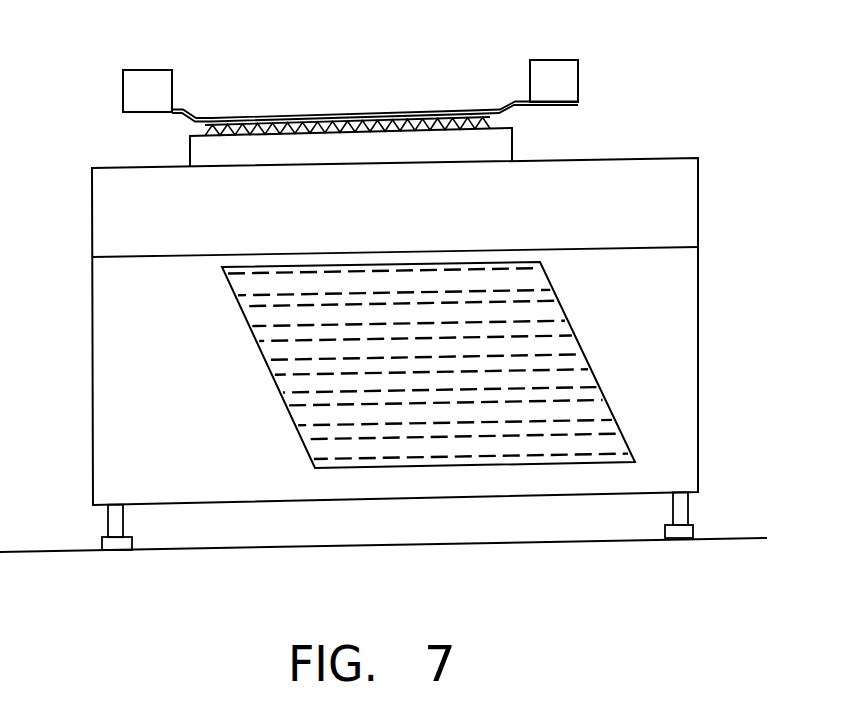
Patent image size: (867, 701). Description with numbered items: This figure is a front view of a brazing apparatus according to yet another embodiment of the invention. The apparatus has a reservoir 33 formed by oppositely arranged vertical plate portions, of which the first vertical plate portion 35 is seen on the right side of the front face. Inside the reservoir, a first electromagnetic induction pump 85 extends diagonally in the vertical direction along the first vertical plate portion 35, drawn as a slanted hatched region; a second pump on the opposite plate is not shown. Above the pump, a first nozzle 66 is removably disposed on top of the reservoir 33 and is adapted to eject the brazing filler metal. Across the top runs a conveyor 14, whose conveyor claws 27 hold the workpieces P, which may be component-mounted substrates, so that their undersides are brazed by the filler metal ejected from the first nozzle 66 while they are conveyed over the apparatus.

The conveyor 14 is at (546, 78).
The conveyor claws 27 is at (493, 110).
The reservoir 33 is at (705, 138).
The first vertical plate portion 35 is at (680, 308).
The first nozzle 66 is at (497, 143).
The first electromagnetic induction pump 85 is at (598, 412).
The workpieces P is at (358, 115).